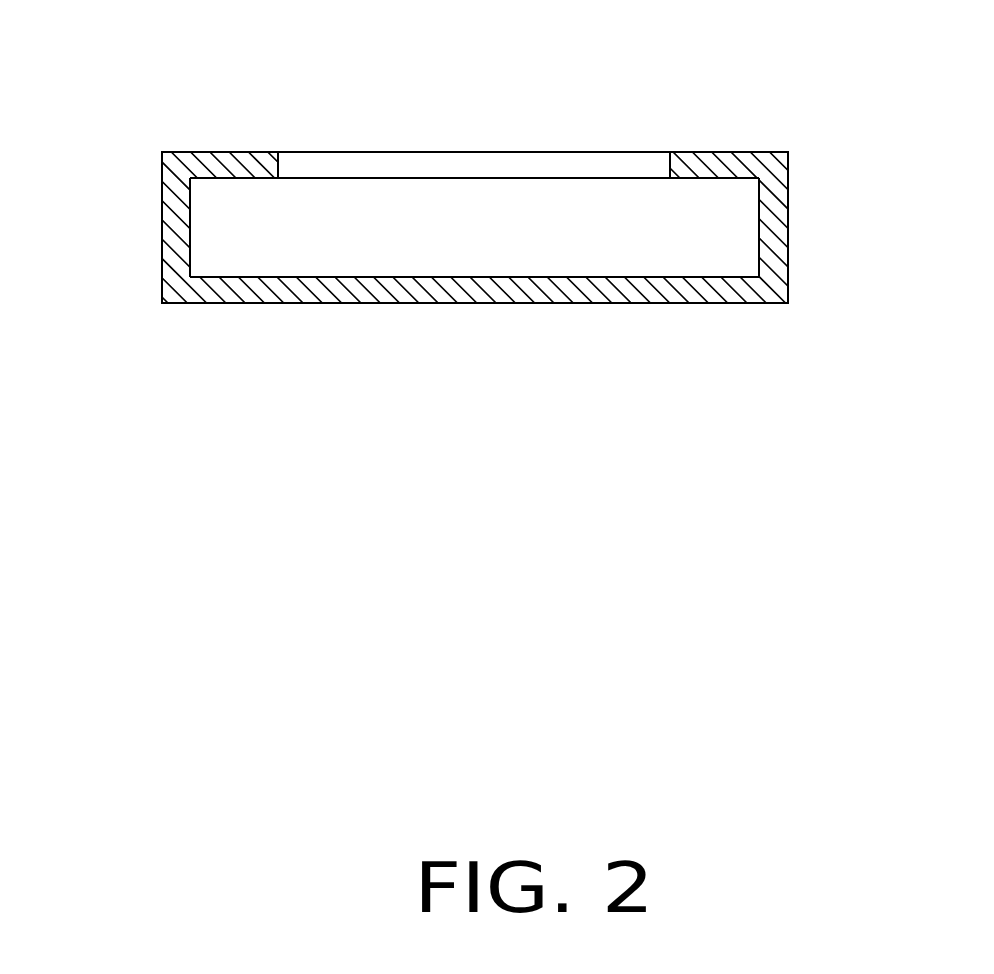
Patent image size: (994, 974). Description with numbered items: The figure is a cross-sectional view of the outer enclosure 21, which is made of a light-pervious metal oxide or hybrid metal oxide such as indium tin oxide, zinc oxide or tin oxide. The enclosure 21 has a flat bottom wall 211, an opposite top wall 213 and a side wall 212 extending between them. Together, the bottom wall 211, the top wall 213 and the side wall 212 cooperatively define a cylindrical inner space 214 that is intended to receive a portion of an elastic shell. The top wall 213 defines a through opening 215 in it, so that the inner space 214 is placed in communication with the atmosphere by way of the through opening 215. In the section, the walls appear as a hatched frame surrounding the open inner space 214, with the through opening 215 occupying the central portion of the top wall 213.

The enclosure 21 is at (746, 82).
The bottom wall 211 is at (410, 295).
The side wall 212 is at (768, 240).
The top wall 213 is at (232, 168).
The inner space 214 is at (265, 253).
The through opening 215 is at (445, 167).